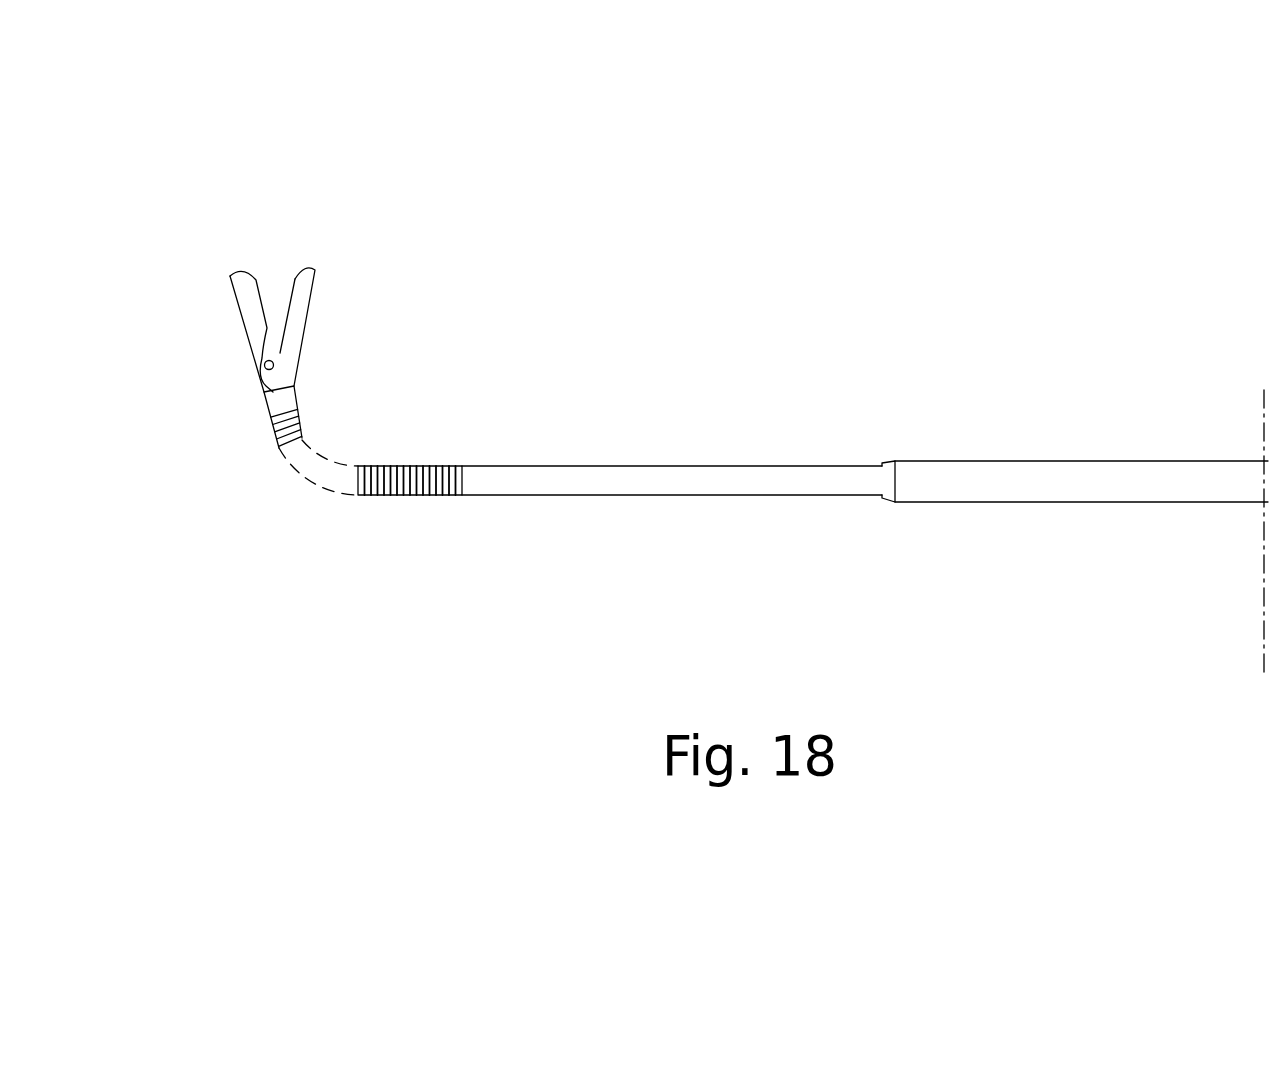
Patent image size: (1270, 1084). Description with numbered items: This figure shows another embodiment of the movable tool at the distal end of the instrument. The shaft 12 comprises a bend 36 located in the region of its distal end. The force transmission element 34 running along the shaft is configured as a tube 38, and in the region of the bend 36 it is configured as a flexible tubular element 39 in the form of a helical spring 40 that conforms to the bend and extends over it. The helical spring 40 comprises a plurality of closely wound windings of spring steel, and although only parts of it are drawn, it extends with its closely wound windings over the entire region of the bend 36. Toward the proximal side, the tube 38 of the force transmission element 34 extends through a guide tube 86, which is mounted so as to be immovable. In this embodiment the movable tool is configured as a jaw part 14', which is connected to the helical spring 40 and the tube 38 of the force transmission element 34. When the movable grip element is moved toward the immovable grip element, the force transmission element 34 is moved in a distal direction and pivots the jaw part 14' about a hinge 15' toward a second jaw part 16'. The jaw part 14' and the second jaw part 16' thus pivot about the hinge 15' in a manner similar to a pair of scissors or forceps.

The shaft 12 is at (691, 440).
The jaw part 14' is at (235, 451).
The hinge 15' is at (327, 283).
The second jaw part 16' is at (209, 348).
The force transmission element 34 is at (526, 445).
The bend 36 is at (336, 418).
The tube 38 is at (768, 485).
The flexible tubular element 39 is at (324, 526).
The helical spring 40 is at (402, 497).
The guide tube 86 is at (1122, 487).